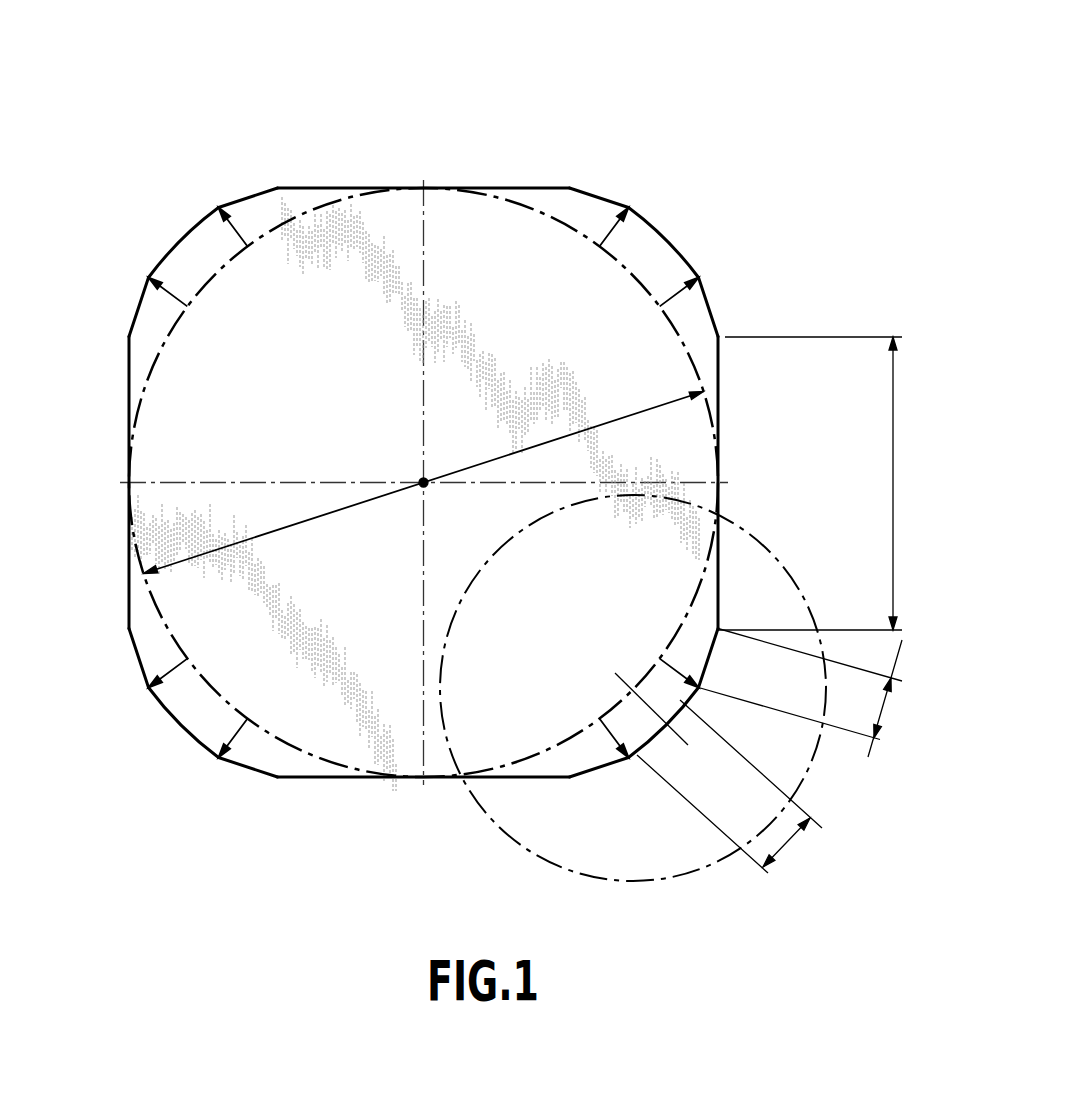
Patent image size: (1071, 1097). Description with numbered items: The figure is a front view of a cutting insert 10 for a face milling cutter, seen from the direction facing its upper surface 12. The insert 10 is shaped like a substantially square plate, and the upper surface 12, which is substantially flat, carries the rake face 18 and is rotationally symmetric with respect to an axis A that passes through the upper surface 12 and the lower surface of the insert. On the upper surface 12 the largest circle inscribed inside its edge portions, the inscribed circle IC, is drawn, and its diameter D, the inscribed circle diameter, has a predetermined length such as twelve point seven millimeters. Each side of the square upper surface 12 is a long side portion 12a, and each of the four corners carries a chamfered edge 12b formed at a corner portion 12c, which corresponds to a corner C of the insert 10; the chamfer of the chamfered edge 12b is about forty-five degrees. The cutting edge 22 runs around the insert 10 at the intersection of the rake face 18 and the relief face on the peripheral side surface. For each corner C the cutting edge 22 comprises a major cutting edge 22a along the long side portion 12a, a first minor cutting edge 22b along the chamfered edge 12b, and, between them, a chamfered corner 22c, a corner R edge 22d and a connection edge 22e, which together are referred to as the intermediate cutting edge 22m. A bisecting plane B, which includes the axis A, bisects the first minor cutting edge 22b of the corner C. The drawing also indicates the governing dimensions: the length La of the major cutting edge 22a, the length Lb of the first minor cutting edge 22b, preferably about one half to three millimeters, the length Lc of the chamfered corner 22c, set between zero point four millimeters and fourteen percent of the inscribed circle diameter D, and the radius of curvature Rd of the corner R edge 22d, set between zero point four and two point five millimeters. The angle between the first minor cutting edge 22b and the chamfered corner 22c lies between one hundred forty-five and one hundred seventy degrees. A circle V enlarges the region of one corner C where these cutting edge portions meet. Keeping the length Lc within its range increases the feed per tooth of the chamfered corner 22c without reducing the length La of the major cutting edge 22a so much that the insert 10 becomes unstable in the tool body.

The cutting insert 10 is at (514, 67).
The upper surface 12 is at (466, 190).
The long side portion 12a is at (432, 188).
The chamfered edge 12b is at (683, 258).
The corner portion 12c is at (144, 117).
The rake face 18 is at (403, 780).
The cutting edge 22 is at (322, 780).
The major cutting edge 22a is at (353, 188).
The first minor cutting edge 22b is at (657, 231).
The chamfered corner 22c is at (268, 191).
The corner R edge 22d is at (221, 206).
The connection edge 22e is at (278, 188).
The intermediate cutting edge 22m is at (243, 193).
The axis A is at (427, 479).
The bisecting plane B is at (674, 732).
The corner C is at (103, 174).
The inscribed circle diameter D is at (320, 517).
The reference circle V is at (488, 546).
The inscribed circle IC is at (150, 370).
The radius of curvature Rd is at (599, 246).
The length of the major cutting edge La is at (822, 483).
The length of the first minor cutting edge Lb is at (729, 788).
The length of the chamfered corner Lc is at (810, 693).